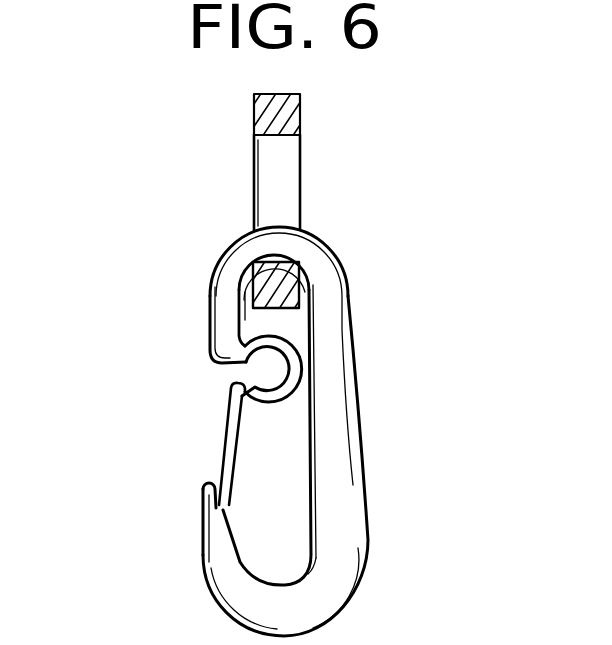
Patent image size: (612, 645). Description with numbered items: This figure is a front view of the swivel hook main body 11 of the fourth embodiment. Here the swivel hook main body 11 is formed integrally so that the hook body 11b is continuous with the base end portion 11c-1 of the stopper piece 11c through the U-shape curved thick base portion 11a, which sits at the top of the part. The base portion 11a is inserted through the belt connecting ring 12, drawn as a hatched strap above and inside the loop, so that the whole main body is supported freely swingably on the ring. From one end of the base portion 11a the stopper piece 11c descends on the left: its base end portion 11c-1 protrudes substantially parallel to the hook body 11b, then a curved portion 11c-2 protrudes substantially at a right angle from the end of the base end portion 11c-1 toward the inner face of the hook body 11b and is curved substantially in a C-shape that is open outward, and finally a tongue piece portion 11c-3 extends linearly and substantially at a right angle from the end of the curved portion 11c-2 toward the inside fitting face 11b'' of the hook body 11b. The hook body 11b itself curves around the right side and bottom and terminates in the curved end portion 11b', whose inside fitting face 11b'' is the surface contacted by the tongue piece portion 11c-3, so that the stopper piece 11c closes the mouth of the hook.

The swivel hook main body 11 is at (279, 400).
The belt connecting ring 12 is at (288, 115).
The base portion 11a is at (272, 232).
The hook body 11b is at (336, 463).
The curved end portion 11b' is at (128, 546).
The inside fitting face 11b'' is at (167, 493).
The stopper piece 11c is at (279, 396).
The base end portion 11c-1 is at (228, 327).
The curved portion 11c-2 is at (292, 372).
The tongue piece portion 11c-3 is at (228, 437).